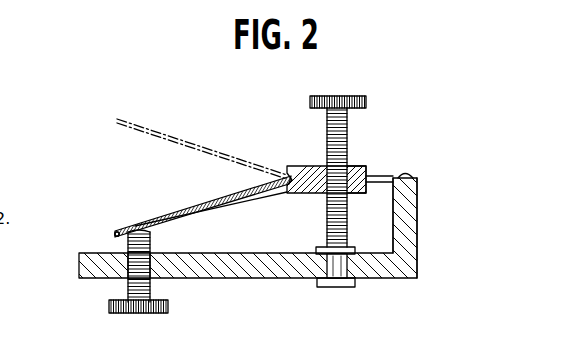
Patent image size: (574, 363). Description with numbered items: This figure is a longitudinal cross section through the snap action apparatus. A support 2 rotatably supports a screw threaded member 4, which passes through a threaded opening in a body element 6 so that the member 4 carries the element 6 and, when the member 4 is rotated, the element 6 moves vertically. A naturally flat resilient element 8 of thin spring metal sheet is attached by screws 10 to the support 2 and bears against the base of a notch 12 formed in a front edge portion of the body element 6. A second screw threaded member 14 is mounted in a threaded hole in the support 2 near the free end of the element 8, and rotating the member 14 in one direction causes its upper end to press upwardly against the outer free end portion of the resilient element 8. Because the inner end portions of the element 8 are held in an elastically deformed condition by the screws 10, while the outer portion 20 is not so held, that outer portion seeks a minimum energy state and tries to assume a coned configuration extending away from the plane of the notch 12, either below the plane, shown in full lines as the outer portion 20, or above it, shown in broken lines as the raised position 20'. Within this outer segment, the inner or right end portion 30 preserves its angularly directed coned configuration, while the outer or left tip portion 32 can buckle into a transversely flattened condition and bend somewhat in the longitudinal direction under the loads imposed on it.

The support 2 is at (375, 282).
The screw threaded member 4 is at (327, 131).
The body element 6 is at (360, 170).
The resilient element 8 is at (386, 176).
The screws 10 is at (406, 172).
The notch 12 is at (287, 190).
The screw threaded member 14 is at (150, 284).
The outer portion of the resilient element 20 is at (209, 207).
The outer portion of the resilient element (broken line position) 20' is at (202, 135).
The inner end portion 30 is at (265, 194).
The outer tip portion 32 is at (116, 230).